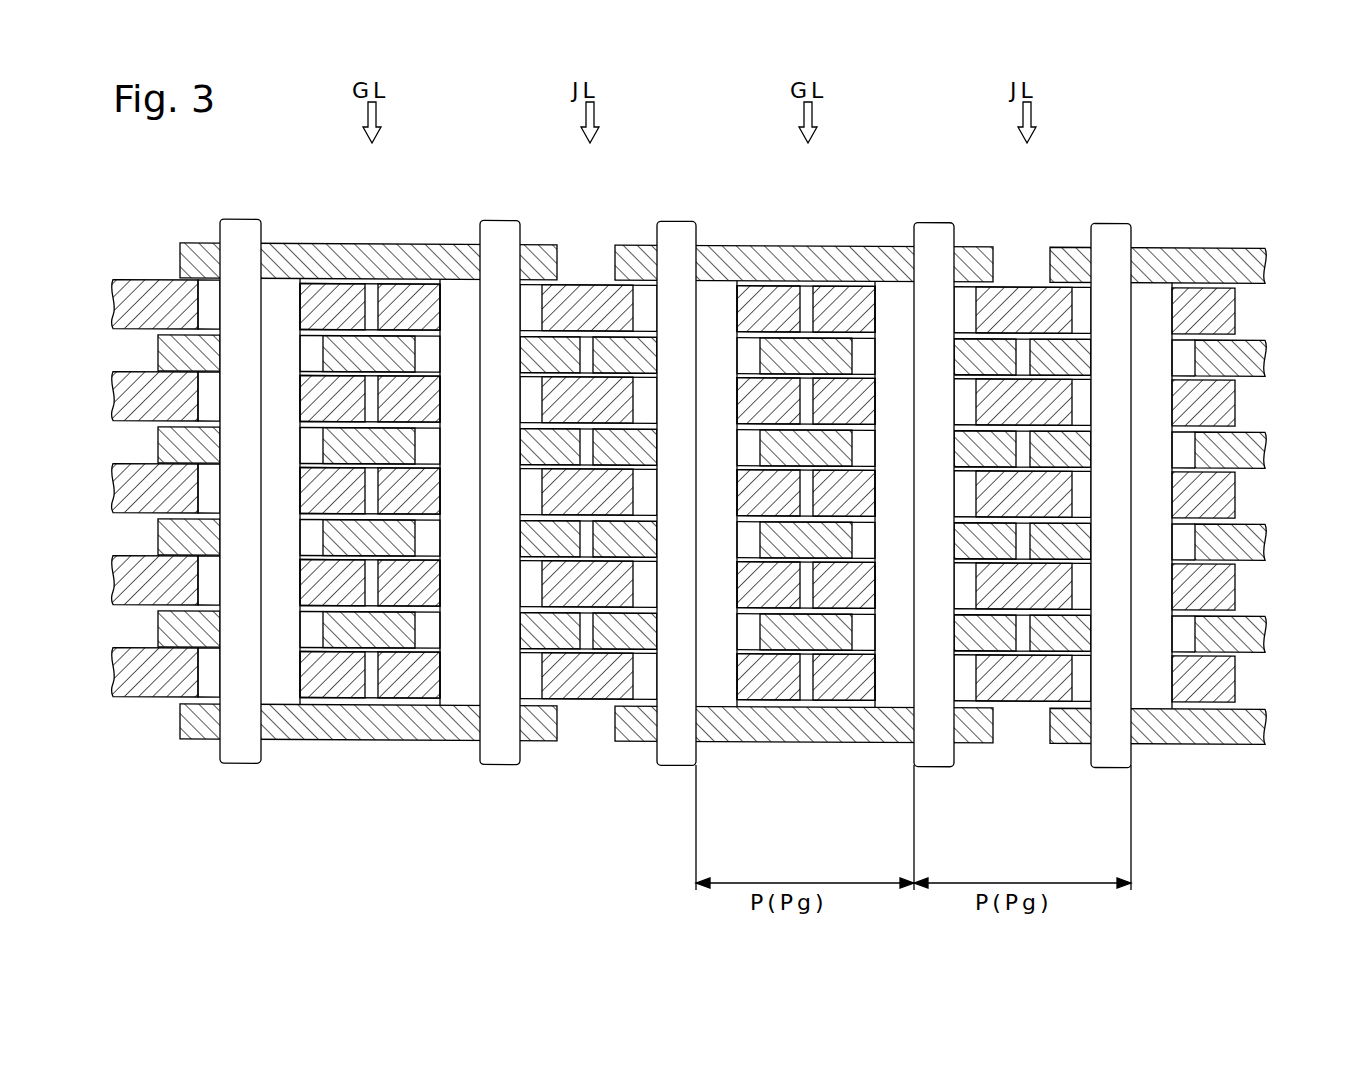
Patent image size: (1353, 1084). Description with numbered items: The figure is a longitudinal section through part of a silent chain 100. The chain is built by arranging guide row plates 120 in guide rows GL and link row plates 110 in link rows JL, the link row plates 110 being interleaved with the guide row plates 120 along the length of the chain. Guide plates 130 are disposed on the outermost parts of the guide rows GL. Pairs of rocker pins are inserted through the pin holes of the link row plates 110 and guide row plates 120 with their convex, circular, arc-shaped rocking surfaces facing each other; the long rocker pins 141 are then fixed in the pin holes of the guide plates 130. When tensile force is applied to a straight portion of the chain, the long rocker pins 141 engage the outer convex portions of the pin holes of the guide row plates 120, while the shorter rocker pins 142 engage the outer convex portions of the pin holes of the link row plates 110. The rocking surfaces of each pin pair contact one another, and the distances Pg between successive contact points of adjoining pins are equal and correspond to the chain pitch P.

The silent chain 100 is at (683, 469).
The link row plate 110 is at (641, 491).
The guide row plate 120 is at (738, 492).
The guide plate 130 is at (723, 492).
The long rocker pin 141 is at (669, 537).
The short rocker pin 142 is at (723, 564).